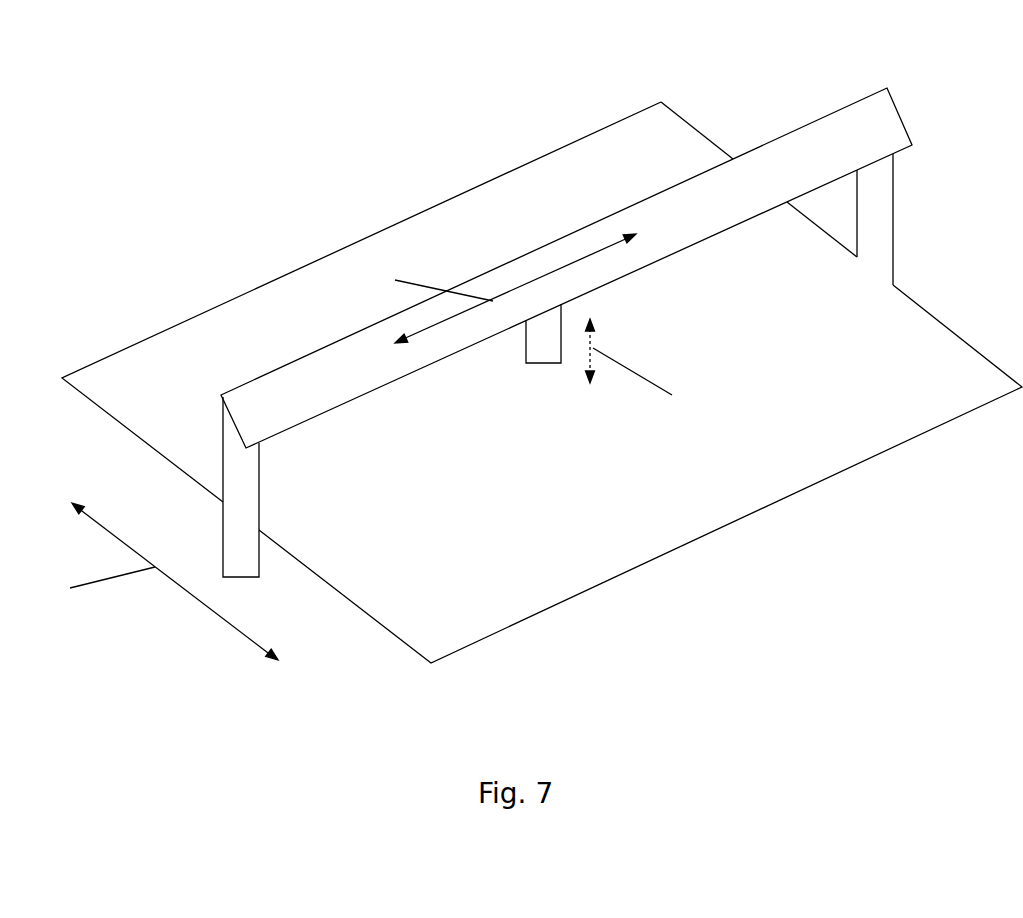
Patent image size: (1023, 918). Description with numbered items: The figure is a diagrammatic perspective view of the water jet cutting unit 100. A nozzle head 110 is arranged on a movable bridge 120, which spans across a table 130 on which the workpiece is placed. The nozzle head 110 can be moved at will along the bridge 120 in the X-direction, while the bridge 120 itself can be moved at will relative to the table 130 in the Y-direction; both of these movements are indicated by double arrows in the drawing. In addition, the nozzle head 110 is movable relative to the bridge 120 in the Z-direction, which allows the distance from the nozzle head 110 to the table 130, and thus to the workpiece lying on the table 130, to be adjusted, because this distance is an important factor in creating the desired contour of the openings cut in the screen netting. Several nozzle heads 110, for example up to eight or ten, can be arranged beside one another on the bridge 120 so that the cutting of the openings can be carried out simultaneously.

The water jet cutting unit 100 is at (296, 196).
The nozzle head 110 is at (542, 352).
The bridge 120 is at (750, 180).
The table 130 is at (460, 617).